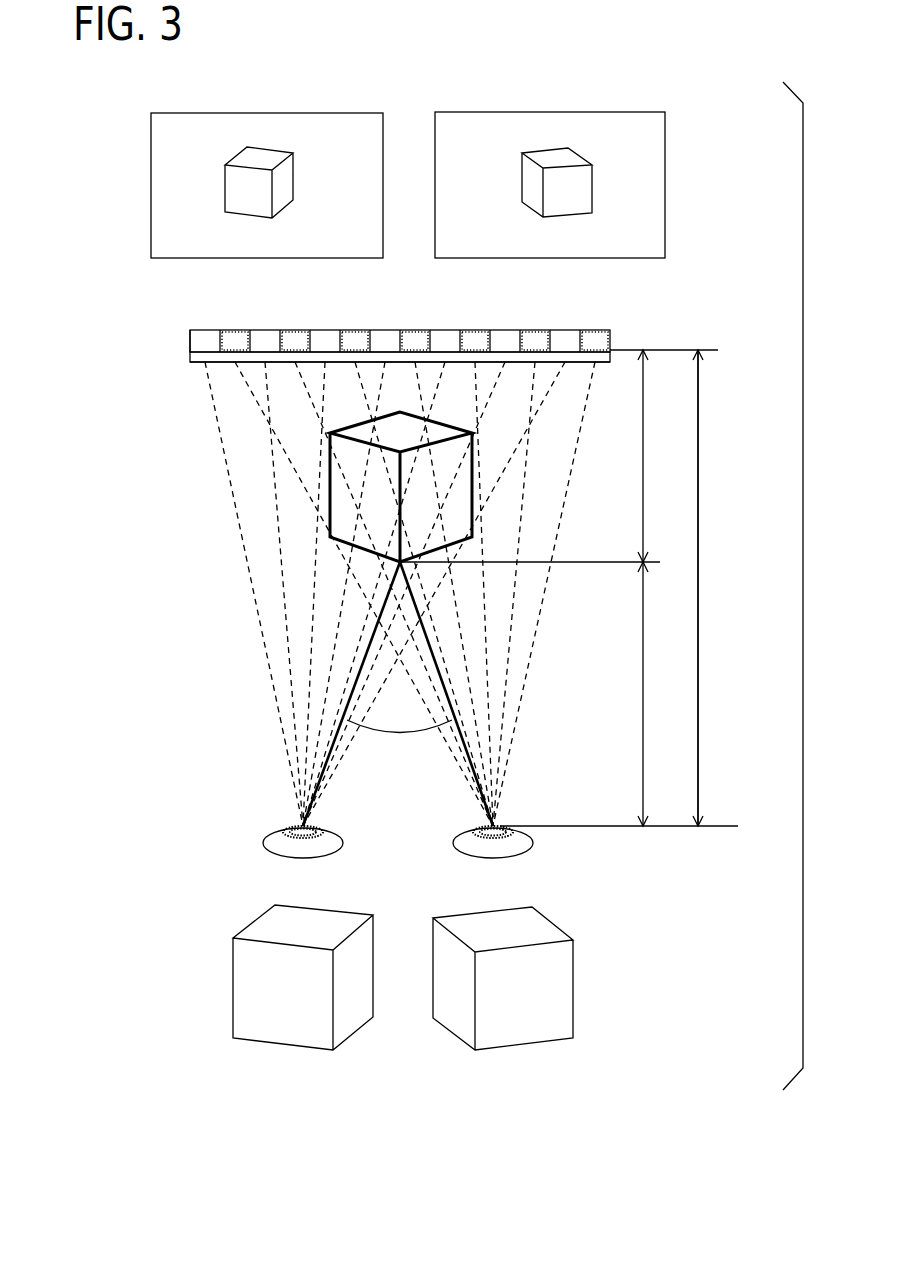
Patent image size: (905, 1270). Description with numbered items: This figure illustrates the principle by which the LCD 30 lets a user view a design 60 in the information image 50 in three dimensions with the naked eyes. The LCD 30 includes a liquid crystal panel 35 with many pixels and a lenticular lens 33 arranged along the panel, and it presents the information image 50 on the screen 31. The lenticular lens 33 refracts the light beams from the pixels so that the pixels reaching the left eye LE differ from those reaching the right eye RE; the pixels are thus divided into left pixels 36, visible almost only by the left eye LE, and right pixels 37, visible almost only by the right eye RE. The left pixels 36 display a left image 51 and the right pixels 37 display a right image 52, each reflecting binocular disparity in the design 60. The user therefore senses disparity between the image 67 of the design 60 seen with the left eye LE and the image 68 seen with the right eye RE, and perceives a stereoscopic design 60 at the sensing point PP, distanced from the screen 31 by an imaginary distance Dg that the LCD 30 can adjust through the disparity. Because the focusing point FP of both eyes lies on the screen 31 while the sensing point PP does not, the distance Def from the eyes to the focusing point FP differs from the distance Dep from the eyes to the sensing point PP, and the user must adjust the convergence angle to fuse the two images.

The LCD 30 is at (347, 327).
The screen 31 is at (160, 227).
The lenticular lens 33 is at (190, 356).
The liquid crystal panel 35 is at (371, 315).
The left pixels 36 is at (263, 330).
The right pixels 37 is at (235, 330).
The information image 50 is at (423, 160).
The left image 51 is at (207, 112).
The right image 52 is at (628, 112).
The design 60 is at (268, 147).
The image of the design viewed with the left eye 67 is at (270, 1043).
The image of the design viewed with the right eye 68 is at (535, 1043).
The left eye LE is at (263, 845).
The right eye RE is at (533, 843).
The focusing point FP is at (347, 360).
The sensing point PP is at (400, 562).
The imaginary distance Dg is at (648, 455).
The distance to the sensing point Dep is at (648, 673).
The distance to the focusing point Def is at (700, 505).